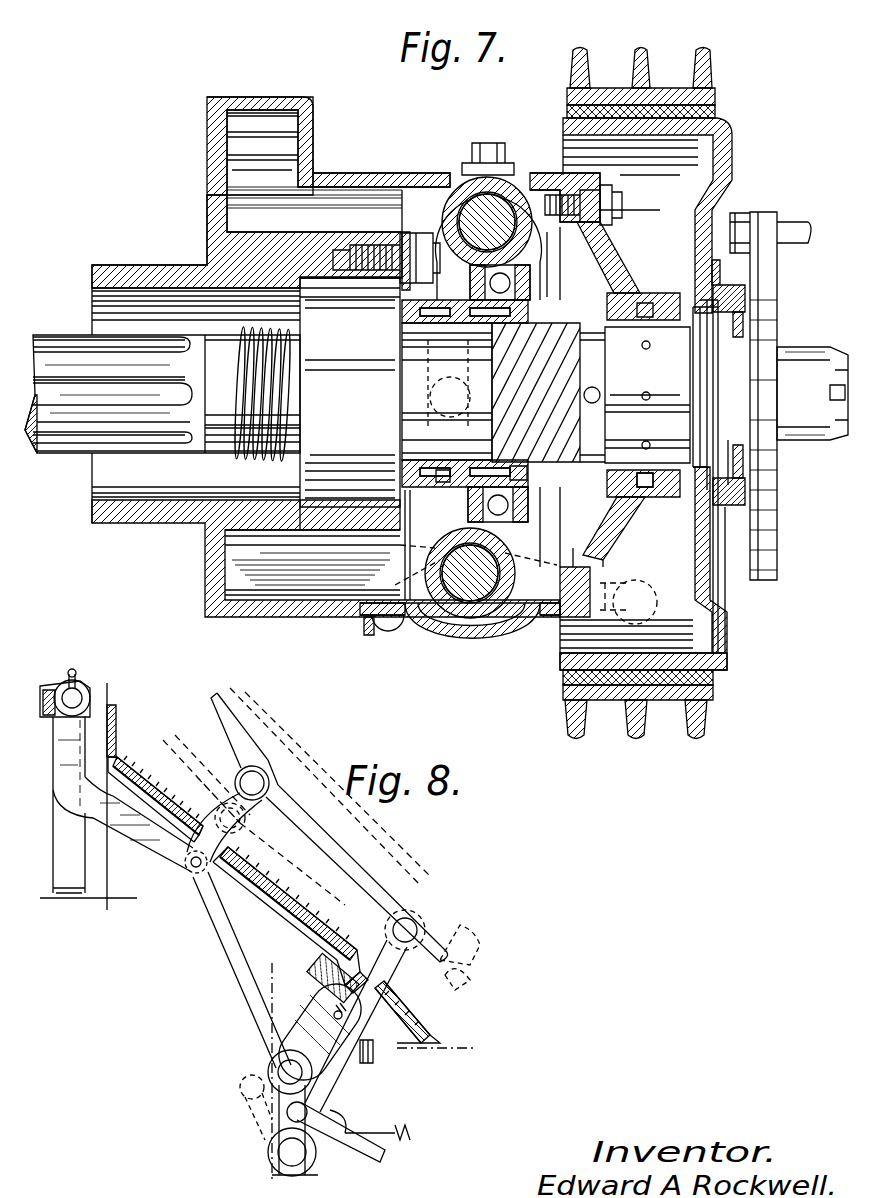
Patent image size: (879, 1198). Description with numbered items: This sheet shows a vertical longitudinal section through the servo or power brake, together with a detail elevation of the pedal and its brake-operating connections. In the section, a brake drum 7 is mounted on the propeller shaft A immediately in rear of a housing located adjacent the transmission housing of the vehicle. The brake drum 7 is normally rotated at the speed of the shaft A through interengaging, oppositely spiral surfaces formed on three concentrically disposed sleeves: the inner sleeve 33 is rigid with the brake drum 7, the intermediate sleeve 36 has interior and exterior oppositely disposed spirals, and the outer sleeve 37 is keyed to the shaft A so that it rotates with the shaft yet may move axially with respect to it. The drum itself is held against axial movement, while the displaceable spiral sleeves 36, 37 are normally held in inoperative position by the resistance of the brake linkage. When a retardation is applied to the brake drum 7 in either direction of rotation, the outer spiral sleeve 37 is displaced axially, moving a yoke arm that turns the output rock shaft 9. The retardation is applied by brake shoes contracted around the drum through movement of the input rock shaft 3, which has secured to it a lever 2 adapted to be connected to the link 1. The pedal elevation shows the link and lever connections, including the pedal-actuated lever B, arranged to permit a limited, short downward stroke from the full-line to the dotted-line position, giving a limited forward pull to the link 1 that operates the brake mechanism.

In FIG. 7, the propeller shaft A is at (70, 335).
In FIG. 7, the output rock shaft 9 is at (462, 232).
In FIG. 7, the inner sleeve 33 is at (556, 398).
In FIG. 7, the intermediate sleeve 36 is at (528, 477).
In FIG. 7, the outer sleeve 37 is at (445, 480).
In FIG. 7, the lever 2 is at (418, 617).
In FIG. 7, the input rock shaft 3 is at (477, 597).
In FIG. 7, the brake drum 7 is at (720, 660).
In FIG. 8, the operating lever B is at (365, 865).
In FIG. 8, the link 1 is at (357, 1150).